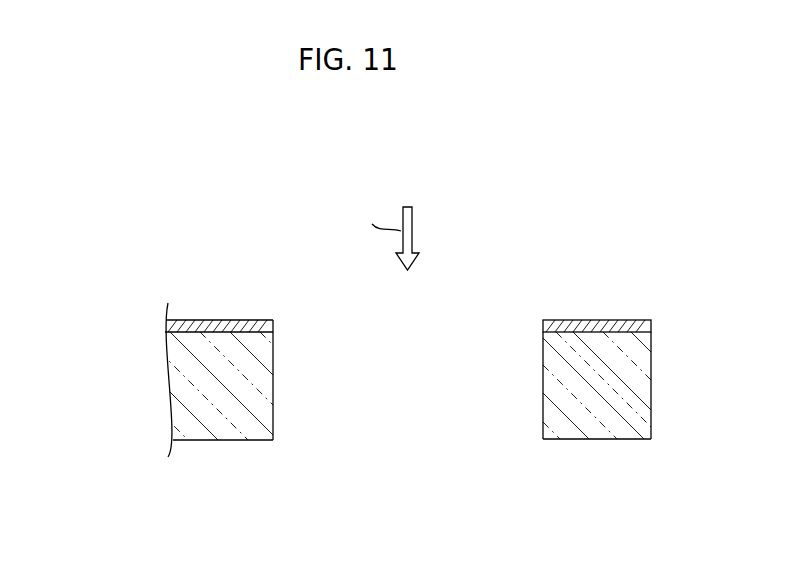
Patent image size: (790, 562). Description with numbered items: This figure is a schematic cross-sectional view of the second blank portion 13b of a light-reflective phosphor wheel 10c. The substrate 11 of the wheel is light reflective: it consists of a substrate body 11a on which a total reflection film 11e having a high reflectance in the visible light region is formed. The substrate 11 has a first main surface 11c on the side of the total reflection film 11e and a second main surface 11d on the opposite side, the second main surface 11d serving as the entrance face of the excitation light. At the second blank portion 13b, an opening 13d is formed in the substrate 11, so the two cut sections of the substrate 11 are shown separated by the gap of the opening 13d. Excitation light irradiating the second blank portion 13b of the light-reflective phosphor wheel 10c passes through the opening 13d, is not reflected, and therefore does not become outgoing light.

The light-reflective phosphor wheel 10c is at (212, 190).
The substrate 11 is at (165, 380).
The total reflection film 11e is at (166, 322).
The substrate body 11a is at (98, 317).
The second blank portion 13b is at (418, 318).
The opening 13d is at (430, 392).
The first main surface 11c is at (583, 318).
The second main surface 11d is at (594, 442).